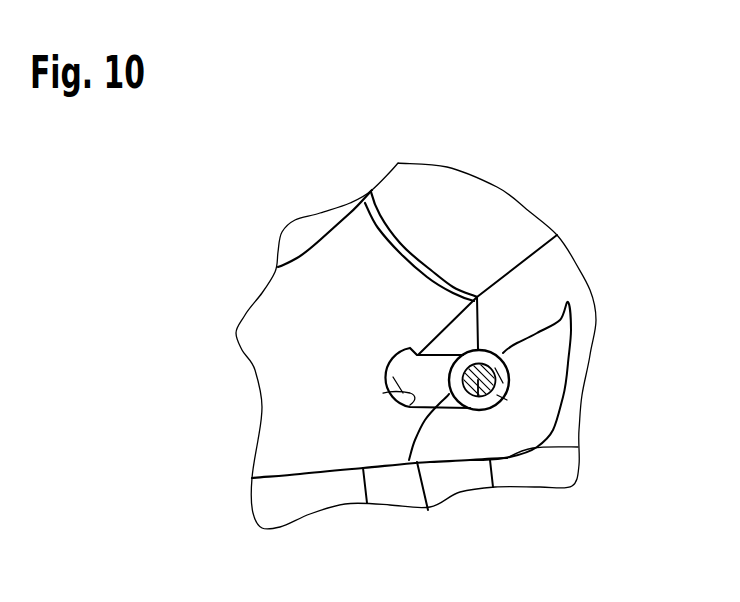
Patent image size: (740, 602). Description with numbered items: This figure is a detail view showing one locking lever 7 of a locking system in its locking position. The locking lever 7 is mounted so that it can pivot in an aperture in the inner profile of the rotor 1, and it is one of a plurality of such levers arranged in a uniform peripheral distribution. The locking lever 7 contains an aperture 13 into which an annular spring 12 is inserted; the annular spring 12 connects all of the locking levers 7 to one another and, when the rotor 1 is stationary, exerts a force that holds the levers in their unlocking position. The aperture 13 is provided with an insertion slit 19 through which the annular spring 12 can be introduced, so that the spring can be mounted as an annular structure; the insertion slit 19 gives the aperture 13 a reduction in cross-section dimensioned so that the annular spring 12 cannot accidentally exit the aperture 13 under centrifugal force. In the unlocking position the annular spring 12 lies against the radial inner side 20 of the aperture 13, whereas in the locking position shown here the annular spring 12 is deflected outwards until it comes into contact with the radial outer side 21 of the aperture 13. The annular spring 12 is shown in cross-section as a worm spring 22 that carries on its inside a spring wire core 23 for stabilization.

The rotor 1 is at (452, 478).
The locking lever 7 is at (300, 364).
The annular spring 12 is at (505, 375).
The aperture 13 is at (457, 330).
The insertion slit 19 is at (513, 297).
The radial inner side 20 is at (413, 403).
The radial outer side 21 is at (508, 388).
The worm spring 22 is at (472, 403).
The spring wire core 23 is at (478, 396).